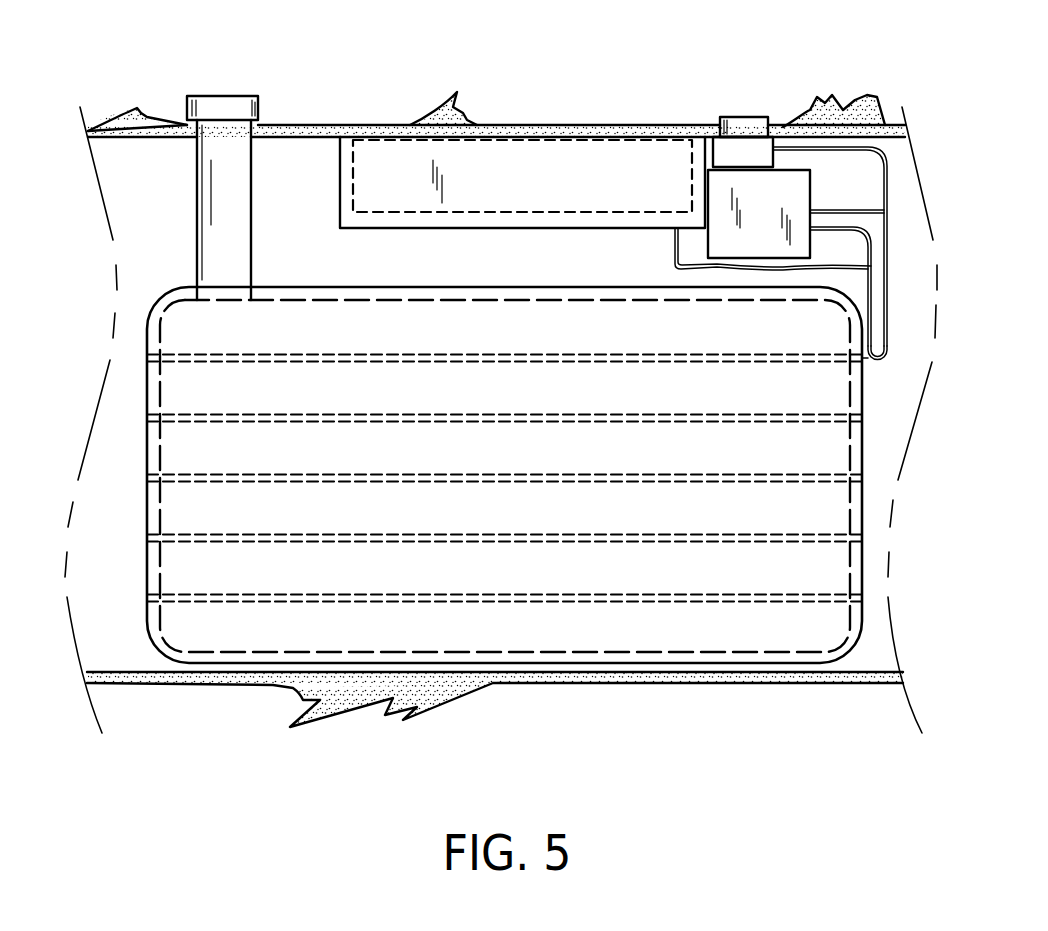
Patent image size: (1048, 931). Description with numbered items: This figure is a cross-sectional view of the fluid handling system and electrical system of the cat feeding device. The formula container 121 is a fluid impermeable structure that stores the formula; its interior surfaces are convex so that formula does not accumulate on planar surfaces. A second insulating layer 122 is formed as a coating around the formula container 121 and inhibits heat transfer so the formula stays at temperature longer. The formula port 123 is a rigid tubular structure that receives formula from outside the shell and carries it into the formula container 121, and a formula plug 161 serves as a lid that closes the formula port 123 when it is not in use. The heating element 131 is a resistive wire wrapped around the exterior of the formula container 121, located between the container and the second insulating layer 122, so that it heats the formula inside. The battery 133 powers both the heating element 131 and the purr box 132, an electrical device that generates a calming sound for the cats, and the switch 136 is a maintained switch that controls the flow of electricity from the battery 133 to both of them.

The formula container 121 is at (862, 562).
The second insulating layer 122 is at (858, 568).
The formula port 123 is at (240, 172).
The heating element 131 is at (787, 360).
The purr box 132 is at (790, 192).
The battery 133 is at (563, 160).
The switch 136 is at (767, 140).
The formula plug 161 is at (218, 107).